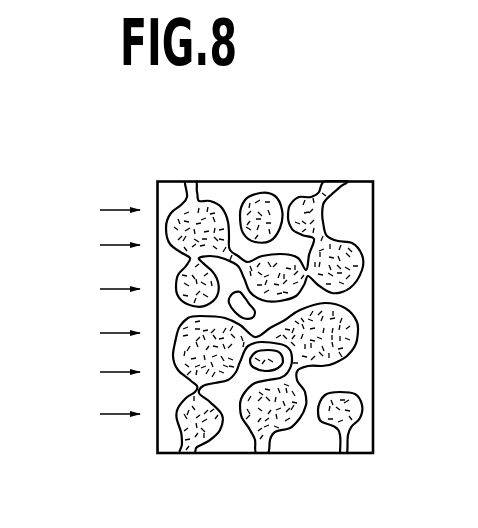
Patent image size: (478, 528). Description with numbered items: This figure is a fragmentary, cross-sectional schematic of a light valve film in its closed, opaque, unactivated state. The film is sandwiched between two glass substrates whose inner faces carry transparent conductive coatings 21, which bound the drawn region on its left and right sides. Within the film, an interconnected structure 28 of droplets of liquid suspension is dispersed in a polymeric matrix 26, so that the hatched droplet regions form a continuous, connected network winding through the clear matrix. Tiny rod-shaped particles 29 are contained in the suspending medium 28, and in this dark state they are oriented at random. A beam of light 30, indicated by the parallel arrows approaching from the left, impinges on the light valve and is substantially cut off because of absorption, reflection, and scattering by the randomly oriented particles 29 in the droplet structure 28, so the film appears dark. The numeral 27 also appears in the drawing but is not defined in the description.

The porous filter body boundary 21 is at (158, 183).
The pores / voids 26 is at (234, 190).
The porous filter material 27 is at (358, 267).
The filter wall / strut 28 is at (201, 207).
The connecting struts 29 is at (340, 183).
The fluid flow direction 30 is at (90, 312).